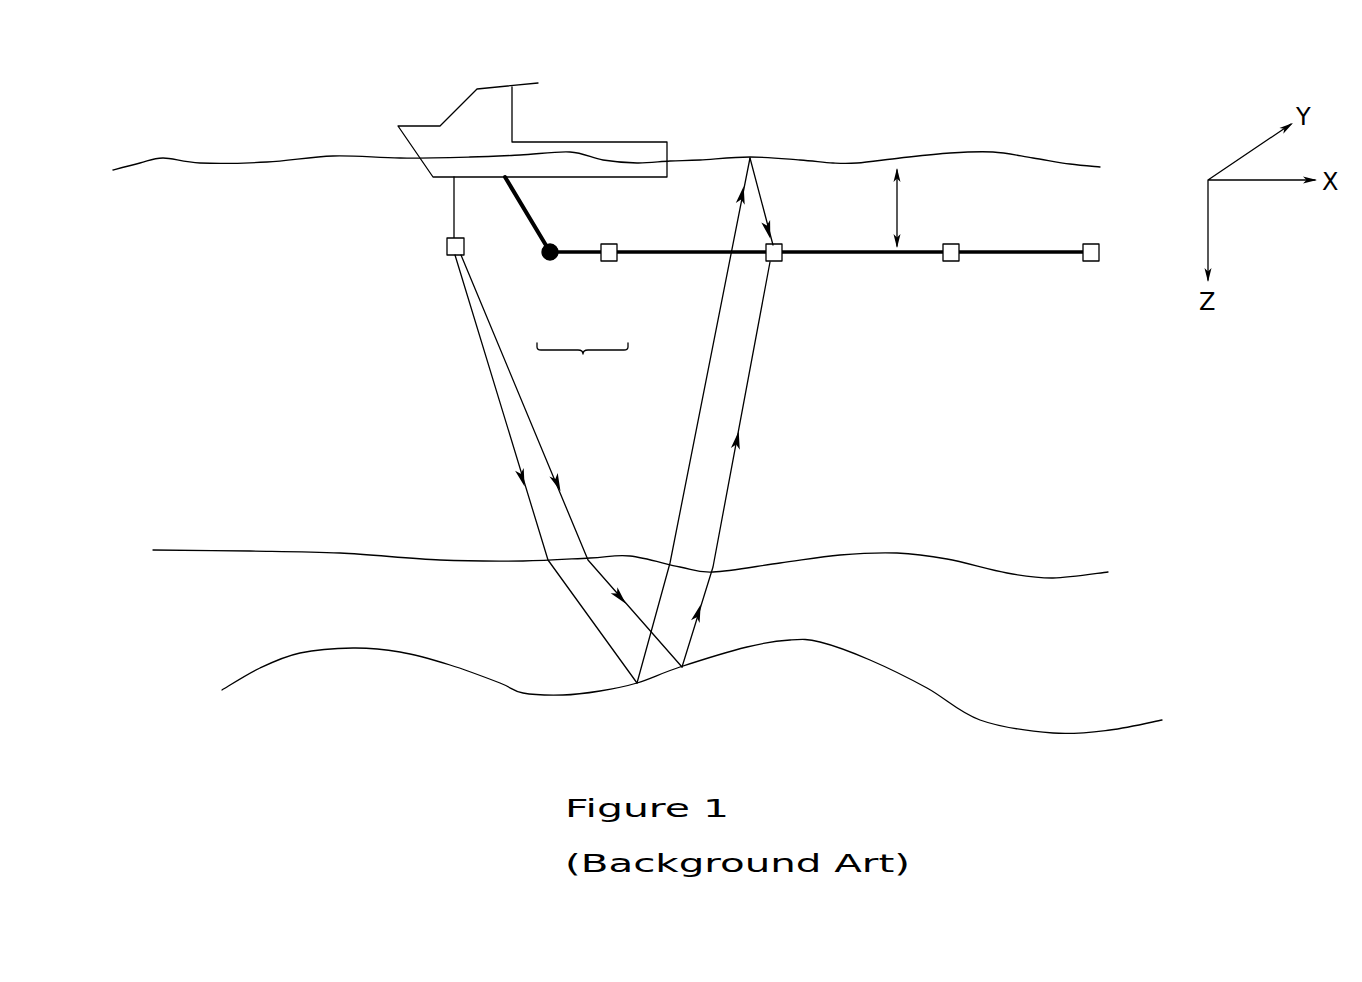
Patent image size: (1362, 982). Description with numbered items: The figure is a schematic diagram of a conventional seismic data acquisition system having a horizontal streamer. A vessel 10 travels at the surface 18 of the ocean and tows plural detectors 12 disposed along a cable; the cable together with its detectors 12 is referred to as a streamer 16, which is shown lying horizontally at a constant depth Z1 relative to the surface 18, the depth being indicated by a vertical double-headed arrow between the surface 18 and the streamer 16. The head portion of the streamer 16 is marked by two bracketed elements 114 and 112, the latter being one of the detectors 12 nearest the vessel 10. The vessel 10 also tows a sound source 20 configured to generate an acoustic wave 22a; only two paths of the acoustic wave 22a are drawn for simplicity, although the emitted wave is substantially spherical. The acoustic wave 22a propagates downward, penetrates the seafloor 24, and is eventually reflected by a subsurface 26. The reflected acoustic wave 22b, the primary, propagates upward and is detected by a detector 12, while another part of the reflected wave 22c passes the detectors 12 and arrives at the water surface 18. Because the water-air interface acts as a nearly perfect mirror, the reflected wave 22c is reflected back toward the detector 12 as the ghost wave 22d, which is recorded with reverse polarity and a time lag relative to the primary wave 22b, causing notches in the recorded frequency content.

The vessel 10 is at (458, 120).
The surface of the ocean 18 is at (797, 157).
The sound source 20 is at (447, 243).
The streamer 16 is at (818, 313).
The lead-in cable / head of streamer 114 is at (583, 254).
The seismic receiver on streamer 112 is at (610, 263).
The detectors 12 is at (775, 262).
The acoustic wave 22a is at (520, 403).
The reflected acoustic wave 22b is at (728, 498).
The reflected wave 22c is at (694, 431).
The ghost wave 22d is at (760, 194).
The constant depth Z1 is at (897, 205).
The seafloor 24 is at (947, 558).
The subsurface 26 is at (927, 688).